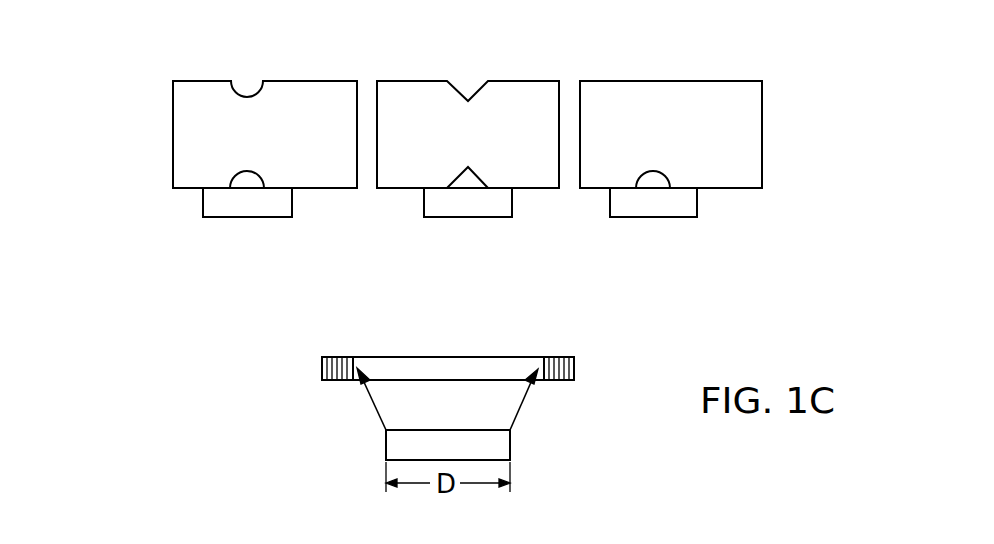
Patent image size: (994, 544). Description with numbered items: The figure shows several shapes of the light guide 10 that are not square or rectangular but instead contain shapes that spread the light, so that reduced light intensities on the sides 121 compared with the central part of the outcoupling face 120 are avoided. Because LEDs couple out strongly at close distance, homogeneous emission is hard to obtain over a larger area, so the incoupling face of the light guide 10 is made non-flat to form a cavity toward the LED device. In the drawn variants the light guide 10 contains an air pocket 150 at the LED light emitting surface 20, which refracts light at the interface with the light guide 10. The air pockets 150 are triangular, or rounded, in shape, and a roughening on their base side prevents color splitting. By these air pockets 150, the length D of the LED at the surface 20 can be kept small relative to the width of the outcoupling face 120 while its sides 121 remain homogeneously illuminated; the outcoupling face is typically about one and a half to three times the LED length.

The light guide 10 is at (704, 136).
The LED light emitting surface 20 is at (655, 203).
The outcoupling face 120 is at (447, 369).
The sides 121 is at (337, 382).
The air pocket 150 is at (231, 175).